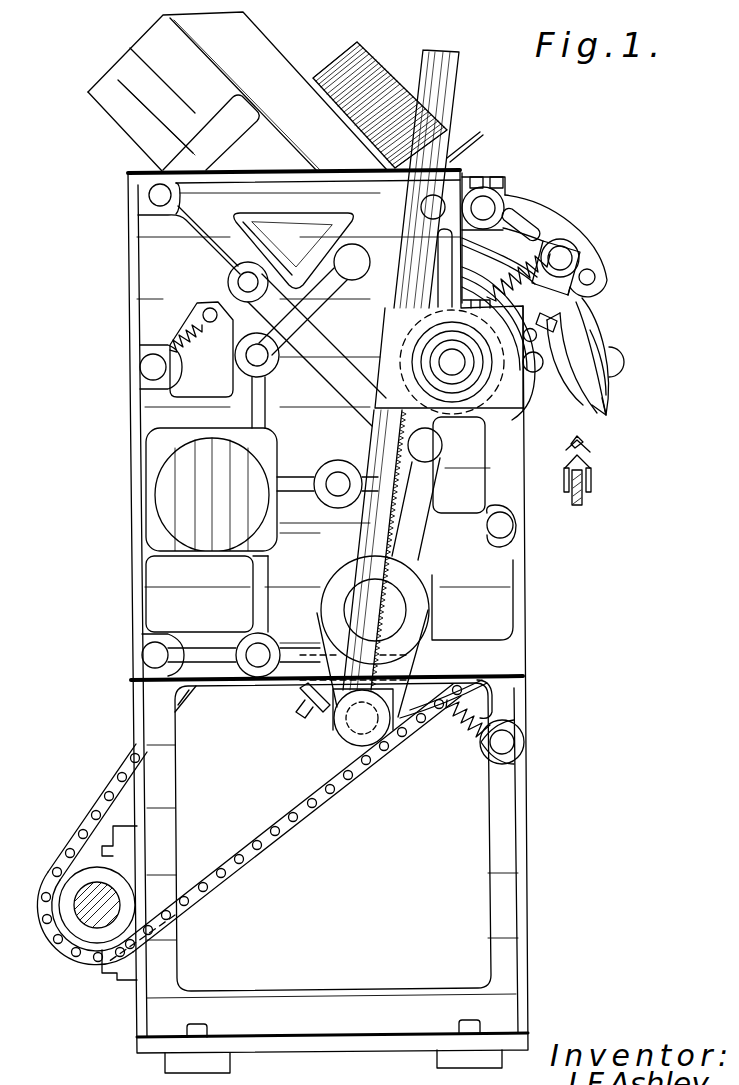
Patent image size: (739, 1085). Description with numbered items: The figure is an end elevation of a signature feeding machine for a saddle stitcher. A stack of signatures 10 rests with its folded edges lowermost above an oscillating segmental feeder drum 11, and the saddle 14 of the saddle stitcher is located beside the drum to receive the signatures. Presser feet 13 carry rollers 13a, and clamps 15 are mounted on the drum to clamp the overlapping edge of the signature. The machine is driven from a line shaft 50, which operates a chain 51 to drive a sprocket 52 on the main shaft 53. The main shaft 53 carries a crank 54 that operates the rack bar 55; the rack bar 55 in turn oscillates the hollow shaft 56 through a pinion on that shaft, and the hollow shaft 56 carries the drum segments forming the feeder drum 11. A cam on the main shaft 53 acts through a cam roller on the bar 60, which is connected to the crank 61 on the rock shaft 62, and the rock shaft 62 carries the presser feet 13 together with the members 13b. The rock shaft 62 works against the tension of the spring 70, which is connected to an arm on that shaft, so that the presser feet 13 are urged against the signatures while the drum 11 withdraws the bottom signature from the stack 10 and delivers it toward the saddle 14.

The stack of signatures 10 is at (343, 62).
The oscillating segmental feeder drum 11 is at (530, 396).
The presser foot 13 is at (603, 315).
The roller 13a is at (622, 367).
The member carried by rock shaft 13b is at (601, 393).
The saddle of the saddle stitcher 14 is at (583, 440).
The clamp 15 is at (548, 327).
The line shaft 50 is at (87, 919).
The chain 51 is at (342, 816).
The sprocket 52 is at (322, 692).
The main shaft 53 is at (395, 615).
The crank 54 is at (405, 667).
The rack bar 55 is at (410, 507).
The hollow shaft 56 is at (480, 383).
The bar 60 is at (550, 318).
The crank 61 is at (543, 228).
The rock shaft 62 is at (486, 208).
The spring 70 is at (518, 276).